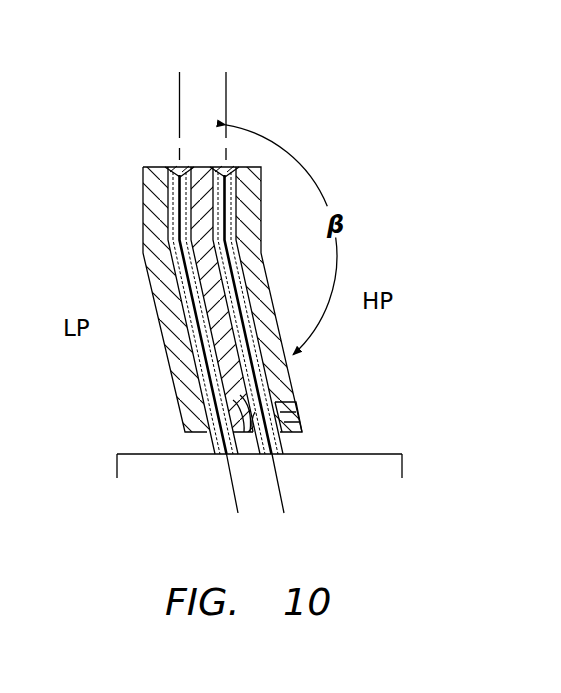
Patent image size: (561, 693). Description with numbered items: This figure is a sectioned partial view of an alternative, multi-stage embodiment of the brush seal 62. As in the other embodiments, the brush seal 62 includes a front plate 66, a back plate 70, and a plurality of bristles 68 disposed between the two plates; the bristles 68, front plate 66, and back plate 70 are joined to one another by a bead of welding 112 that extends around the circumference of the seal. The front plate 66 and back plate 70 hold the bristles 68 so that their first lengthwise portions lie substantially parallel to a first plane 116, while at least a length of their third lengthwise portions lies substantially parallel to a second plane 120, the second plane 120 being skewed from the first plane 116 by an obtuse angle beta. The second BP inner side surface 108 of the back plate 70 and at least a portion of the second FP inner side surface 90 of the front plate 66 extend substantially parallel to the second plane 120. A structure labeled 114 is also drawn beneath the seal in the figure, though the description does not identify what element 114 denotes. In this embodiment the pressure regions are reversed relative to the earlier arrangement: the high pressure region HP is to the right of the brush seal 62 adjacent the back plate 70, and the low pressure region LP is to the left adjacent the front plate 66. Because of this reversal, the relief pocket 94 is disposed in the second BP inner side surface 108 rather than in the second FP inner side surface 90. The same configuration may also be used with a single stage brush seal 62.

The brush seal 62 is at (211, 253).
The front plate 66 is at (165, 357).
The back plate 70 is at (268, 272).
The bristles 68 is at (168, 258).
The second FP inner side surface 90 is at (178, 398).
The relief pocket 94 is at (306, 424).
The second BP inner side surface 108 is at (292, 372).
The bead of welding 112 is at (174, 164).
The mounting plate 114 is at (385, 452).
The first plane 116 is at (228, 100).
The second plane 120 is at (283, 498).